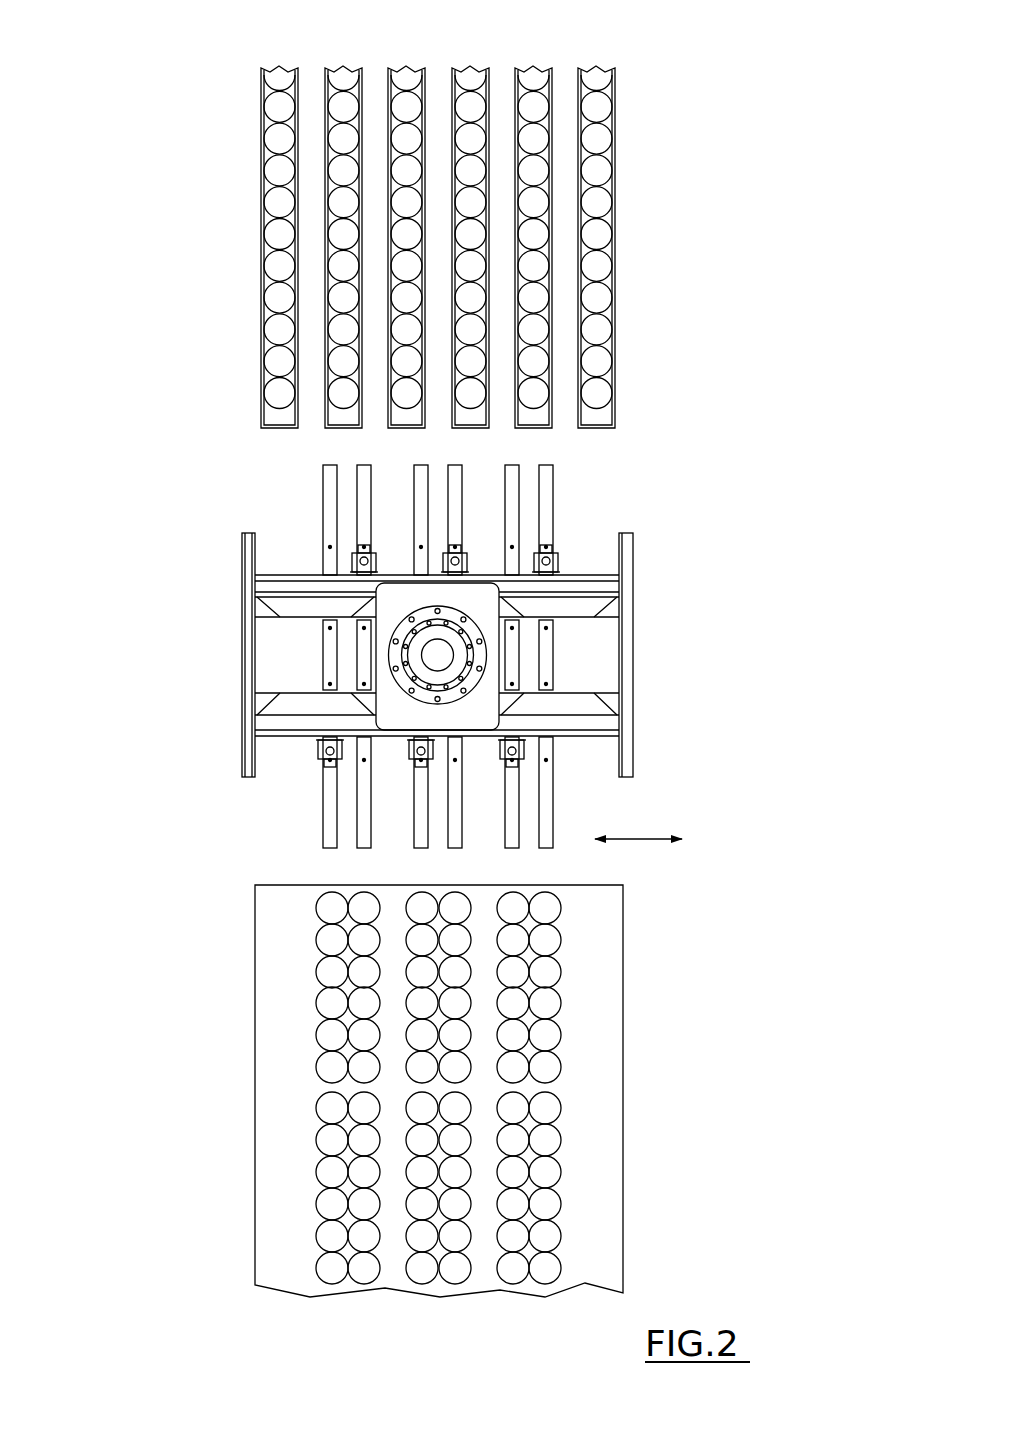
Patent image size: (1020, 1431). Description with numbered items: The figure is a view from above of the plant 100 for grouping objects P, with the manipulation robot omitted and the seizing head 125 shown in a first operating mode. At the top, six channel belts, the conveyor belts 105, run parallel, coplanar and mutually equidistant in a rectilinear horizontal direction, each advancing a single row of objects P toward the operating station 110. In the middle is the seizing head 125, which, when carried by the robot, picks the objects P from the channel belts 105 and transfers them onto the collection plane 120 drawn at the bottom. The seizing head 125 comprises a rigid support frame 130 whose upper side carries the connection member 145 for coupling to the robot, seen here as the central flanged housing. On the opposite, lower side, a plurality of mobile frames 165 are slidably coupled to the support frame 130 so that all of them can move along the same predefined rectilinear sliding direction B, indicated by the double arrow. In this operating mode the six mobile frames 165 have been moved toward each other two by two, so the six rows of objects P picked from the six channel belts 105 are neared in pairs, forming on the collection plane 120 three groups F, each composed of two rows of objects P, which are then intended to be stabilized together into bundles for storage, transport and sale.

The plant 100 is at (740, 285).
The conveyor belts 105 is at (262, 88).
The objects P is at (330, 192).
The operating station 110 is at (142, 472).
The collection plane 120 is at (598, 1180).
The groups F is at (578, 1003).
The seizing head 125 is at (203, 593).
The support frame 130 is at (625, 643).
The connection member 145 is at (467, 673).
The mobile frames 165 is at (550, 497).
The sliding direction B is at (638, 823).